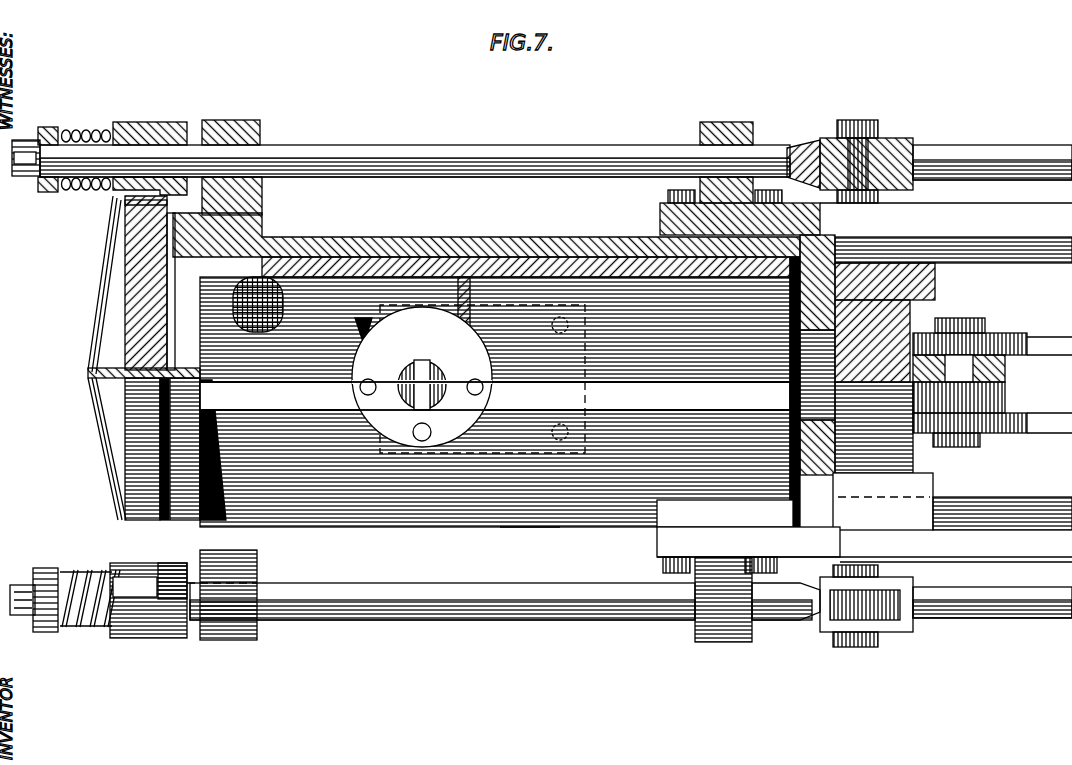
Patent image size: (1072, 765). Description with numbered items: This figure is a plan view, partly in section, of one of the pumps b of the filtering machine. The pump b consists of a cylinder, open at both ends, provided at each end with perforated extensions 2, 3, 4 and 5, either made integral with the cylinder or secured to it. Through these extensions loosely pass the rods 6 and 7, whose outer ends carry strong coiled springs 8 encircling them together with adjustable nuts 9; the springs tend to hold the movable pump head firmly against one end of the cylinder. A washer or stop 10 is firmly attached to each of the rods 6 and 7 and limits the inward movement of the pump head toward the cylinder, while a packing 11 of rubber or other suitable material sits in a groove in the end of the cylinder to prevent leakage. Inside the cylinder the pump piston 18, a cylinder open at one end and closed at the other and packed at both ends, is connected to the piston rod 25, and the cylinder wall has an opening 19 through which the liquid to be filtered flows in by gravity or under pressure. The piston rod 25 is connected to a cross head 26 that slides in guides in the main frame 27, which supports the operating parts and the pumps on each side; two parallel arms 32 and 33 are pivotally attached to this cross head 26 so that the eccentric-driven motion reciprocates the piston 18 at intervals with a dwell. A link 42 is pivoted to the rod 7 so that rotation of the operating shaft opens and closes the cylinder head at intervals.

The perforated extension 2 is at (757, 130).
The perforated extension 3 is at (714, 642).
The perforated extension 4 is at (232, 640).
The perforated extension 5 is at (262, 126).
The rod 6 is at (488, 145).
The rod 7 is at (415, 583).
The coiled spring 8 is at (172, 140).
The adjustable nut 9 is at (30, 568).
The washer or stop 10 is at (188, 586).
The packing 11 is at (262, 226).
The pump piston 18 is at (410, 258).
The opening 19 is at (410, 386).
The piston rod 25 is at (603, 360).
The cross head 26 is at (935, 302).
The main frame 27 is at (960, 565).
The parallel arm 32 is at (1037, 335).
The parallel arm 33 is at (1042, 433).
The link 42 is at (1002, 145).
The pump b is at (528, 527).